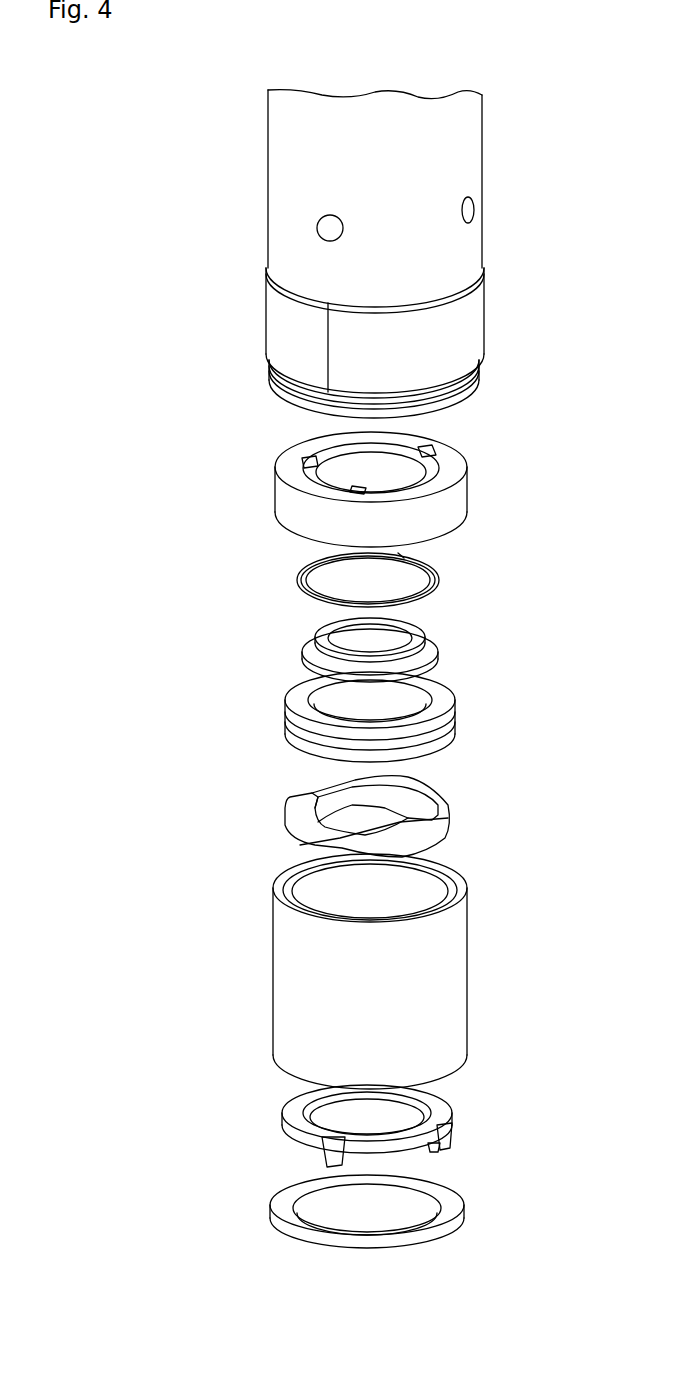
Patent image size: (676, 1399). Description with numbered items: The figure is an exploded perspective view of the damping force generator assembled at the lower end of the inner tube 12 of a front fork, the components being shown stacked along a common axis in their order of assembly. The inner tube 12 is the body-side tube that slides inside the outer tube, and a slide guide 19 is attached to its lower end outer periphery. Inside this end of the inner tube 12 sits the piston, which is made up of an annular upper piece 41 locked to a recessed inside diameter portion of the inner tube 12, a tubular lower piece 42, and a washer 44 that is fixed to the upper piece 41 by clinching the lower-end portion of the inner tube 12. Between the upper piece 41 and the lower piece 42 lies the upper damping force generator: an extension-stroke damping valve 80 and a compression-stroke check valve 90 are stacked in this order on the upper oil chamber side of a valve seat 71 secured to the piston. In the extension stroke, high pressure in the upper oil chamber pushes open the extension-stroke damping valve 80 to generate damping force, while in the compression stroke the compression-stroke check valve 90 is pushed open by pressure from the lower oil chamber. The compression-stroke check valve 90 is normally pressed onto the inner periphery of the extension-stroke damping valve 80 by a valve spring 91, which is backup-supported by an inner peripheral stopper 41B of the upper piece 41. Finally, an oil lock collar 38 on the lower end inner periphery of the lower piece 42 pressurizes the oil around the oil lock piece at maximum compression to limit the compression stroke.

The inner tube 12 is at (273, 188).
The slide guide 19 is at (270, 322).
The upper piece 41 is at (458, 497).
The inner peripheral stopper 41B is at (437, 462).
The valve spring 91 is at (443, 580).
The compression-stroke check valve 90 is at (437, 642).
The extension-stroke damping valve 80 is at (457, 695).
The valve seat 71 is at (443, 793).
The lower piece 42 is at (458, 973).
The oil lock collar 38 is at (453, 1108).
The washer 44 is at (463, 1208).